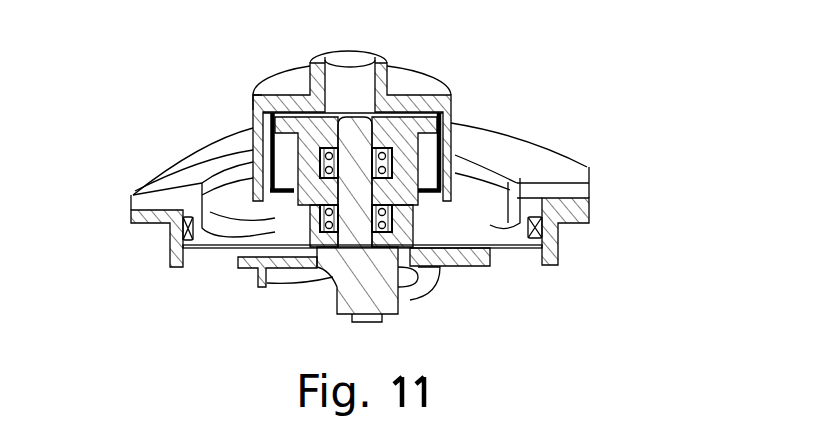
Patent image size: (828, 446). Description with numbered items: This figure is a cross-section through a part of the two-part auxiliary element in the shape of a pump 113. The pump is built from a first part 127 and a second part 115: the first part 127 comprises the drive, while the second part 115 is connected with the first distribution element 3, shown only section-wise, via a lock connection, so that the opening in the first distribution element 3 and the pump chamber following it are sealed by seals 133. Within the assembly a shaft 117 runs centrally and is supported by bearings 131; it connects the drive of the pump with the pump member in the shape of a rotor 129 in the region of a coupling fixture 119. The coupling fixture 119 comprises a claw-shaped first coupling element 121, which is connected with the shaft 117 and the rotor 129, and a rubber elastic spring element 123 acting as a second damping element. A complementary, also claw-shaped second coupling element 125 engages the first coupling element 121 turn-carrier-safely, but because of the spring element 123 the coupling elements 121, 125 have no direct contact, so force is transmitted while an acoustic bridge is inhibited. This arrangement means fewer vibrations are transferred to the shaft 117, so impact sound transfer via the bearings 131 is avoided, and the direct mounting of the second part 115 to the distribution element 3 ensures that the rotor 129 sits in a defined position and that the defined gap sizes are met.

The first distribution element 3 is at (131, 217).
The pump 113 is at (512, 88).
The second part 115 is at (597, 168).
The shaft 117 is at (347, 132).
The coupling fixture 119 is at (245, 98).
The first coupling element 121 is at (131, 200).
The spring element 123 is at (253, 128).
The second coupling element 125 is at (453, 108).
The first part 127 is at (287, 62).
The rotor 129 is at (257, 281).
The bearings 131 is at (318, 242).
The seals 133 is at (523, 258).